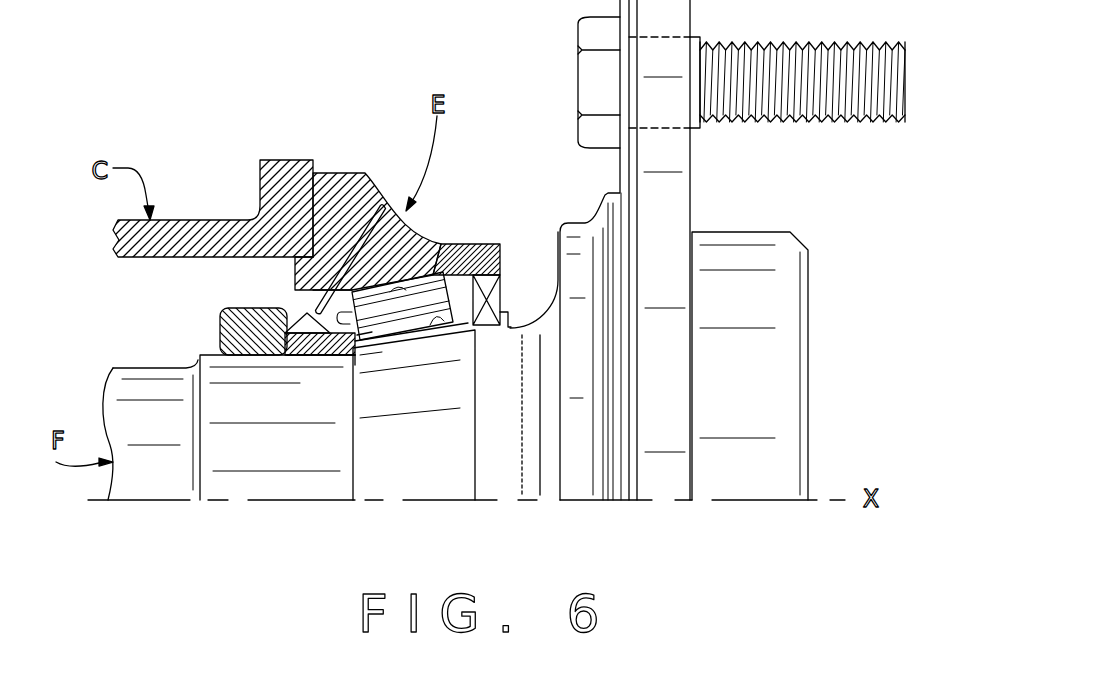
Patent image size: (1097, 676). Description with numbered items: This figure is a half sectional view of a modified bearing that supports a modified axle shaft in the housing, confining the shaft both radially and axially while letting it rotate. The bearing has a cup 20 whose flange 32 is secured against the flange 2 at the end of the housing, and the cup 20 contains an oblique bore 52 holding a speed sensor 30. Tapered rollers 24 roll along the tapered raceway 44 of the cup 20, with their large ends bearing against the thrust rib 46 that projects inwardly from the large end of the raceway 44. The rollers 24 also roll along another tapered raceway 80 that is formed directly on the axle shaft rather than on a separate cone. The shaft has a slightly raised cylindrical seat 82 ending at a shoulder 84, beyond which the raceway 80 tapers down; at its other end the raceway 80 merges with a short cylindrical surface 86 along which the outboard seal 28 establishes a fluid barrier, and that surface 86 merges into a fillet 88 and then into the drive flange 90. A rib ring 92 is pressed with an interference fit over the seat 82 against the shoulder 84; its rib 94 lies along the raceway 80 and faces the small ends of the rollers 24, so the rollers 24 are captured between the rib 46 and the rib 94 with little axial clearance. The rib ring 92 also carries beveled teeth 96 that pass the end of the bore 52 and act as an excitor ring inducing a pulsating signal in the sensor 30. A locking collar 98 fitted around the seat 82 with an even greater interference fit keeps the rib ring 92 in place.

The flange 2 is at (281, 167).
The cup 20 is at (405, 223).
The tapered rollers 24 is at (405, 340).
The outboard seal 28 is at (505, 297).
The speed sensor 30 is at (292, 272).
The flange 32 is at (334, 185).
The raceway 44 is at (446, 244).
The thrust rib 46 is at (486, 265).
The oblique bore 52 is at (390, 237).
The raceway 80 is at (441, 332).
The cylindrical seat 82 is at (200, 352).
The shoulder 84 is at (333, 362).
The short cylindrical surface 86 is at (505, 320).
The fillet 88 is at (535, 322).
The drive flange 90 is at (667, 150).
The rib ring 92 is at (306, 362).
The rib 94 is at (385, 344).
The teeth 96 is at (305, 318).
The locking collar 98 is at (222, 317).